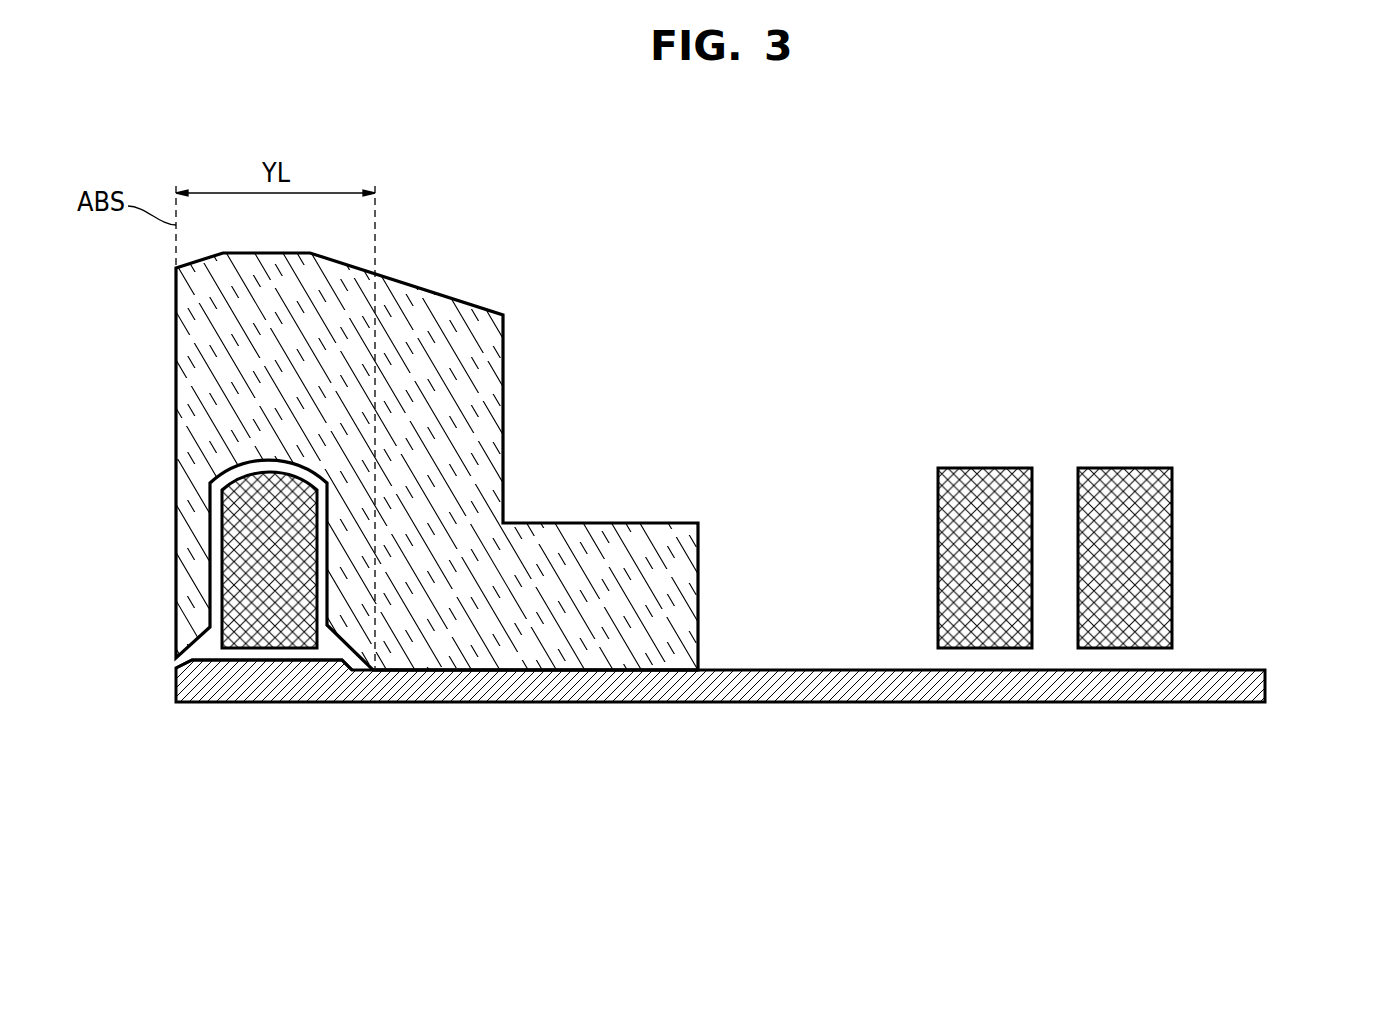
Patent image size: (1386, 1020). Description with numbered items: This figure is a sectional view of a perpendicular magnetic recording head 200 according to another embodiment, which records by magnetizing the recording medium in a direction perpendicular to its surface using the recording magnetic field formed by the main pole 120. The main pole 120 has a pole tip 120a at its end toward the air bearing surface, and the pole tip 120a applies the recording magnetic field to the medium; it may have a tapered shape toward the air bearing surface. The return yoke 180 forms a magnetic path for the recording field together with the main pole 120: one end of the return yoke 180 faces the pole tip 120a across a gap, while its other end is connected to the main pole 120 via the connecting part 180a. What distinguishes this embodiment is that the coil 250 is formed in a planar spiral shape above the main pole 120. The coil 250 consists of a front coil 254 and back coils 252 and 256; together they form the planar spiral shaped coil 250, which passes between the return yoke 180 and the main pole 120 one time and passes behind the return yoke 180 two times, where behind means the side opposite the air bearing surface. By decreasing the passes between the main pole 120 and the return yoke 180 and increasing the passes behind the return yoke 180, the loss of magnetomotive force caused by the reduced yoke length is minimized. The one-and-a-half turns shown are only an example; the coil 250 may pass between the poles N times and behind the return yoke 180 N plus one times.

The perpendicular magnetic recording head 200 is at (1142, 302).
The main pole 120 is at (1262, 688).
The pole tip 120a is at (188, 683).
The return yoke 180 is at (483, 459).
The connecting part 180a is at (645, 668).
The coil 250 is at (1194, 540).
The back coil 252 is at (988, 475).
The front coil 254 is at (235, 523).
The back coil 256 is at (1122, 475).